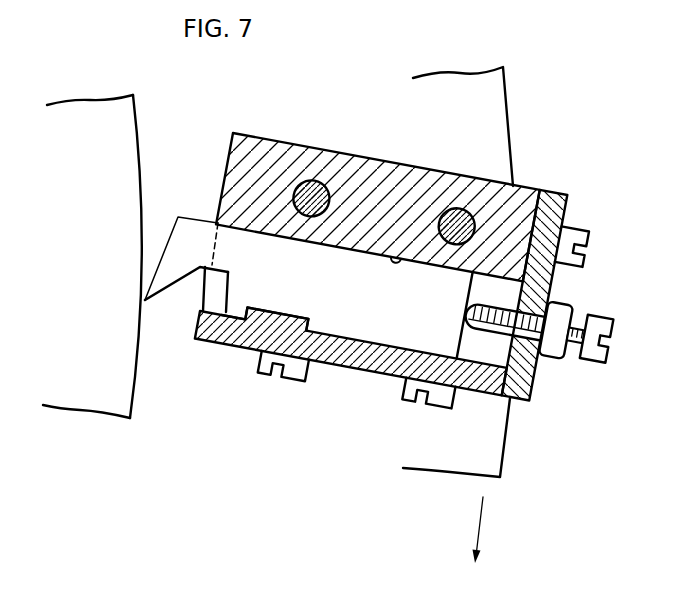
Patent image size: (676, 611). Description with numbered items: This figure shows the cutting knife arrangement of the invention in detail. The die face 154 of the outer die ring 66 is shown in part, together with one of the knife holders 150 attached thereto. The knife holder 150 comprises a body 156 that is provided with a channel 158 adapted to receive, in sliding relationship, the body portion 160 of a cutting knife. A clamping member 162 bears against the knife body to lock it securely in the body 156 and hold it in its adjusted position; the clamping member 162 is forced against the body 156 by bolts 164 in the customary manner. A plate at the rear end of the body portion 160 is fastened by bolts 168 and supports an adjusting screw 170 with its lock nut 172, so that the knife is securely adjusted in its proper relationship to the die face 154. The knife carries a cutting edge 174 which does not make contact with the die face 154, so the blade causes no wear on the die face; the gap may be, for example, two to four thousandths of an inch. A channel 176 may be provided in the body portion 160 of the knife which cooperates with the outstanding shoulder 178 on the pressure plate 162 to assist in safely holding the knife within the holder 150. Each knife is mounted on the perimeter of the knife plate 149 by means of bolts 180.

The outer die ring 66 is at (100, 232).
The knife plate 149 is at (488, 453).
The knife holder 150 is at (412, 264).
The die face 154 is at (138, 115).
The body 156 is at (381, 266).
The channel 158 is at (395, 260).
The body portion of cutting knife 160 is at (465, 315).
The clamping member 162 is at (352, 347).
The bolts 164 is at (357, 380).
The bolts 168 is at (572, 246).
The adjusting screw 170 is at (588, 337).
The lock nut 172 is at (517, 323).
The cutting edge 174 is at (152, 302).
The channel 176 is at (234, 317).
The outstanding shoulder 178 is at (276, 319).
The bolts 180 is at (384, 212).